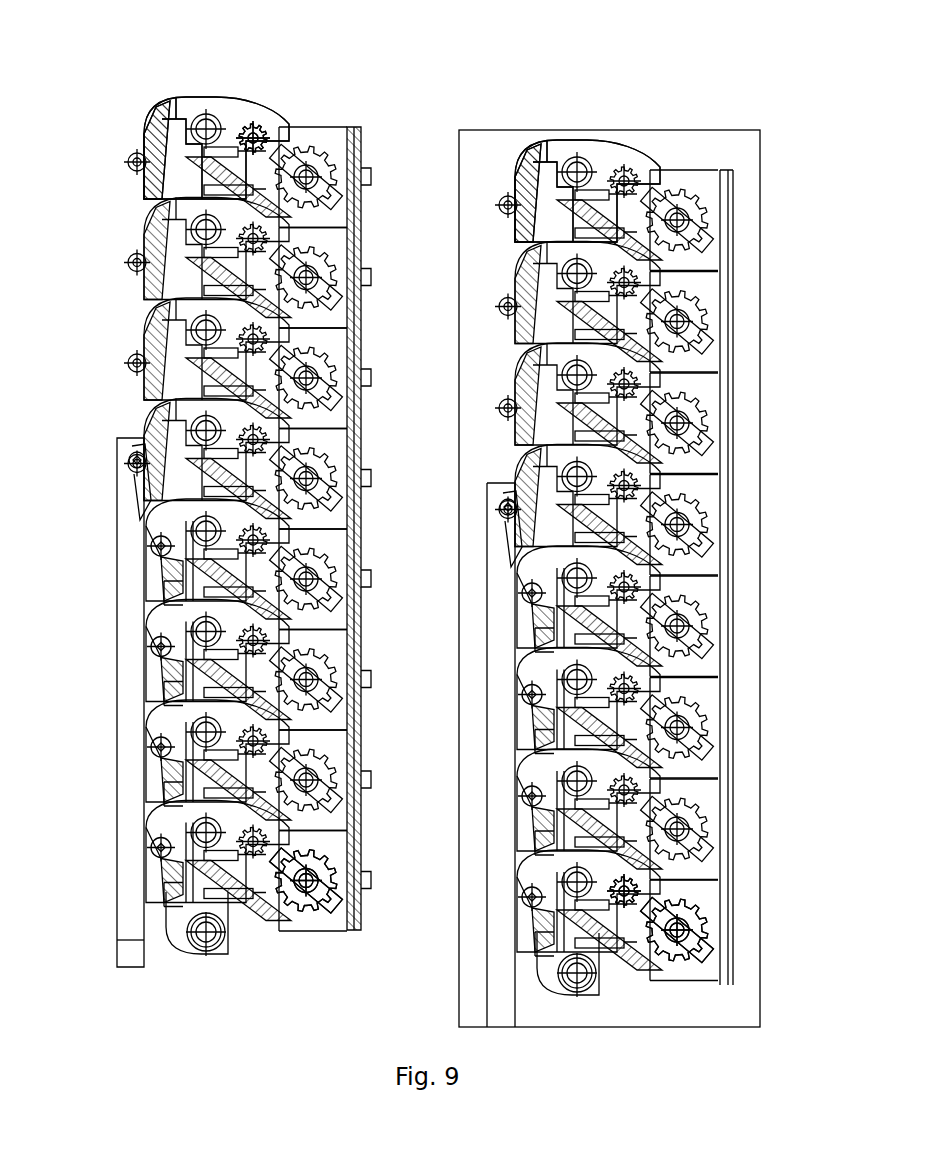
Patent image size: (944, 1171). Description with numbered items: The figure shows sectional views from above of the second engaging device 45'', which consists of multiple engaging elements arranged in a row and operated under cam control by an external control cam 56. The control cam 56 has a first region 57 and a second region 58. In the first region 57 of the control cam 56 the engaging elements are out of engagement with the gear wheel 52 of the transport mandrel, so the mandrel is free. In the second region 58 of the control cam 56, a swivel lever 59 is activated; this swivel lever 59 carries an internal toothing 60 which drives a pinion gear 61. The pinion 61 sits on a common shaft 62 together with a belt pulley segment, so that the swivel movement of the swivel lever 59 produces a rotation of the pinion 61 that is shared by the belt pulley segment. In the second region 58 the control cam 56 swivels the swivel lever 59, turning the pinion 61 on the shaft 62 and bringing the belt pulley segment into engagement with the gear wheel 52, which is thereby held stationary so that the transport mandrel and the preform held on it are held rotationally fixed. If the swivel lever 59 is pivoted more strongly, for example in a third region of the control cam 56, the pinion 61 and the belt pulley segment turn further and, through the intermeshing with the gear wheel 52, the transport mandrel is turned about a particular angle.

The second engaging device 45'' is at (448, 574).
The gear wheel 52 is at (325, 920).
The control cam 56 is at (135, 955).
The first region 57 is at (135, 720).
The second region 58 is at (120, 468).
The swivel lever 59 is at (205, 103).
The internal toothing 60 is at (265, 128).
The pinion gear 61 is at (305, 755).
The common shaft 62 is at (625, 870).